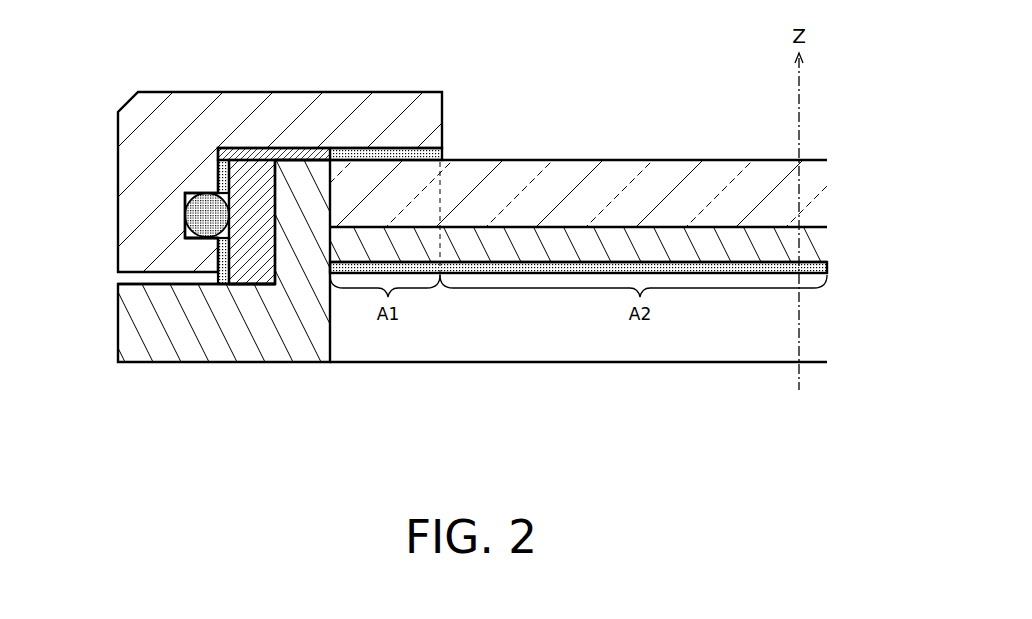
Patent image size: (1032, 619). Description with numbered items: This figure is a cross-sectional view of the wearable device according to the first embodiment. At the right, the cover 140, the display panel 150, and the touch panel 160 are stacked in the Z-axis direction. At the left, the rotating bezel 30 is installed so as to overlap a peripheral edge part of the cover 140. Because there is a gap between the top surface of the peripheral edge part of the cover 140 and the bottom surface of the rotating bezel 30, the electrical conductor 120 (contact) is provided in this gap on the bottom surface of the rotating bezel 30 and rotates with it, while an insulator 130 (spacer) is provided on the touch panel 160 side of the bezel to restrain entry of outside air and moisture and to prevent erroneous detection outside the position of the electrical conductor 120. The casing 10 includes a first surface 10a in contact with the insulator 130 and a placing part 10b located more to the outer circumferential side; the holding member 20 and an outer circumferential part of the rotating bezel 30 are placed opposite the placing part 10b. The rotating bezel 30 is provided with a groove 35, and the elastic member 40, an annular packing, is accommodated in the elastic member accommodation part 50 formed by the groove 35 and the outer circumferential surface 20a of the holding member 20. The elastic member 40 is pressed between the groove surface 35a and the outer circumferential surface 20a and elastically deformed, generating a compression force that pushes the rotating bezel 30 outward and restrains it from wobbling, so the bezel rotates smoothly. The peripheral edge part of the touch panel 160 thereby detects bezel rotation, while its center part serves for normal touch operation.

The casing 10 is at (118, 320).
The first surface 10a is at (310, 176).
The placing part 10b is at (155, 287).
The holding member 20 is at (247, 160).
The outer circumferential surface 20a is at (245, 267).
The rotating bezel 30 is at (442, 117).
The groove 35 is at (188, 191).
The groove surface 35a is at (210, 243).
The elastic member 40 is at (185, 215).
The elastic member accommodation part 50 is at (224, 191).
The electrical conductor 120 is at (412, 148).
The insulator 130 is at (303, 156).
The cover 140 is at (828, 183).
The display panel 150 is at (826, 238).
The touch panel 160 is at (828, 265).